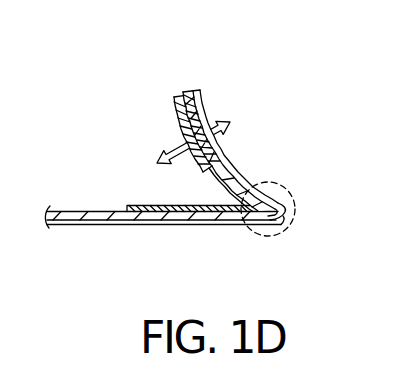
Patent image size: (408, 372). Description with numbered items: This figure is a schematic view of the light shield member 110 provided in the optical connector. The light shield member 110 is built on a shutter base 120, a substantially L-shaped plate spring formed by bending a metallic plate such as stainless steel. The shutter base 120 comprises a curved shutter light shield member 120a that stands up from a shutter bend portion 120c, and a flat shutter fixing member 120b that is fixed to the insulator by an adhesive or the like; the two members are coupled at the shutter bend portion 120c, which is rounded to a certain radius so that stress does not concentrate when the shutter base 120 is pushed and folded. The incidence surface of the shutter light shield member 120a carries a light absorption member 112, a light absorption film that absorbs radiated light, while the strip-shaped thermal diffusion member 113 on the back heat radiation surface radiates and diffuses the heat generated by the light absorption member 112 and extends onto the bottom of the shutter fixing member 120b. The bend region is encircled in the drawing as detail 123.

The light shield member 110 is at (294, 93).
The light absorption member 112 is at (170, 107).
The thermal diffusion member 113 is at (220, 168).
The shutter base 120 is at (189, 82).
The shutter light shield member 120a is at (200, 103).
The shutter fixing member 120b is at (167, 204).
The shutter bend portion 120c is at (268, 224).
The connection region (detail circle) 123 is at (293, 209).